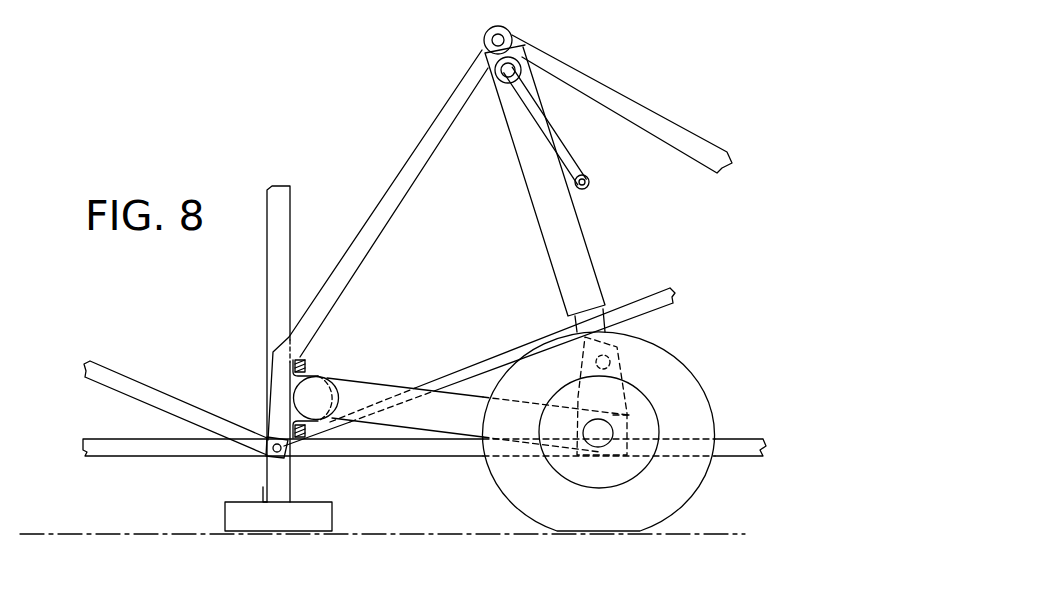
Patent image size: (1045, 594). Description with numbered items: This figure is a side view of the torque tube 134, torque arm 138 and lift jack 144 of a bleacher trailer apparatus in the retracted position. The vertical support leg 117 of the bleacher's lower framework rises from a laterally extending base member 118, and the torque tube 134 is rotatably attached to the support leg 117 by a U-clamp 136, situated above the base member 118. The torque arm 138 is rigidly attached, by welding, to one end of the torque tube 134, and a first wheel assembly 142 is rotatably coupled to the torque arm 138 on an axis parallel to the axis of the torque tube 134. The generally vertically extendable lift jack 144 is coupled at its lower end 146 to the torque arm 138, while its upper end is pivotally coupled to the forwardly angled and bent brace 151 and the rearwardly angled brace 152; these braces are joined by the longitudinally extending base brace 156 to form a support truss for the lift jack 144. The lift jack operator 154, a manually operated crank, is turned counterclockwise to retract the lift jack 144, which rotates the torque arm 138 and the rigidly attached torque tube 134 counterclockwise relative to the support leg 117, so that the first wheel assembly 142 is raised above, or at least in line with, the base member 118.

The vertical support leg 117 is at (282, 198).
The base member 118 is at (260, 517).
The torque tube 134 is at (314, 398).
The U-clamp 136 is at (315, 372).
The torque arm 138 is at (423, 420).
The first wheel assembly 142 is at (653, 538).
The lift jack 144 is at (580, 282).
The lower end of lift jack 146 is at (716, 318).
The bent brace 151 is at (410, 157).
The rearwardly angled brace 152 is at (677, 132).
The lift jack operator 154 is at (573, 162).
The longitudinally extending base brace 156 is at (737, 445).